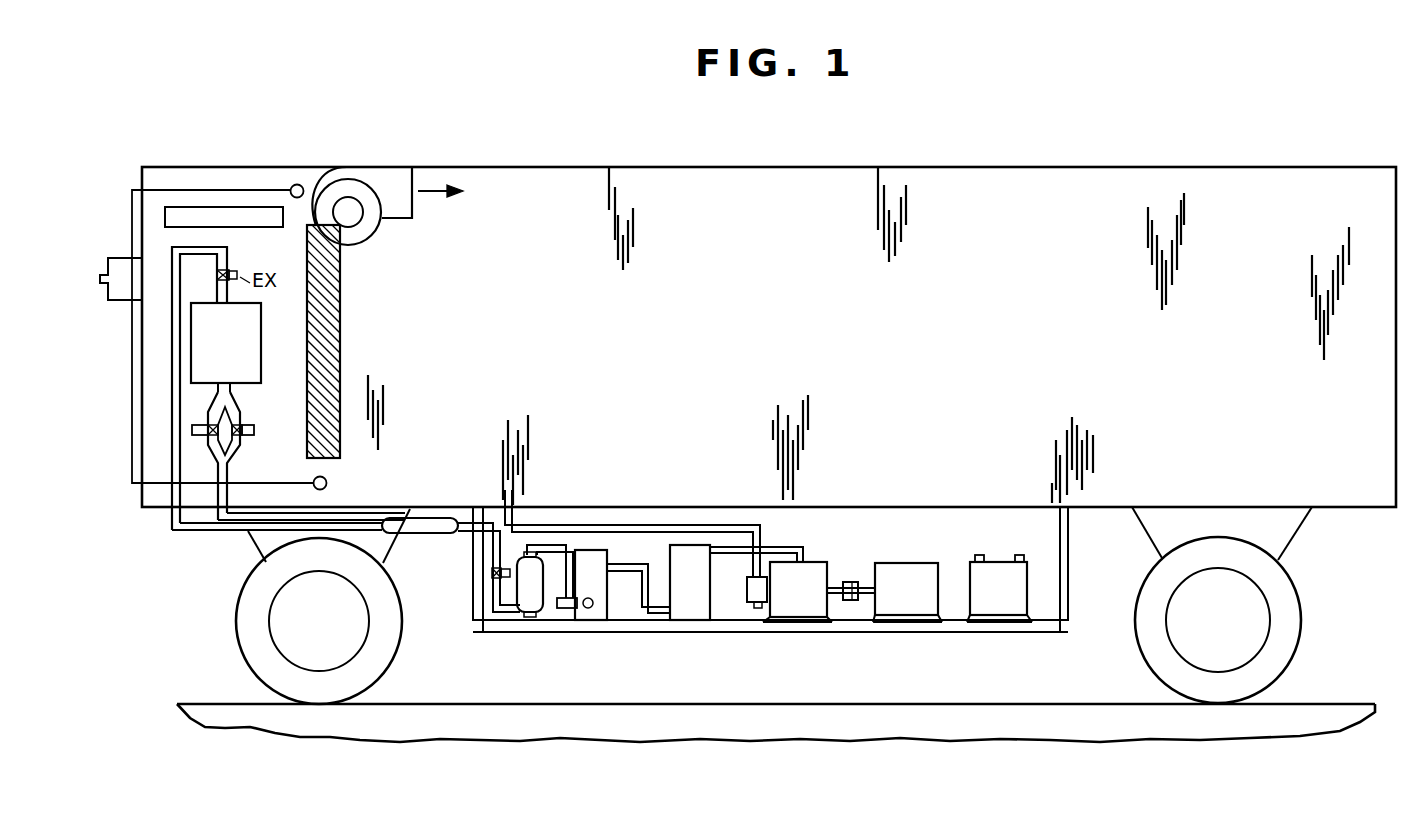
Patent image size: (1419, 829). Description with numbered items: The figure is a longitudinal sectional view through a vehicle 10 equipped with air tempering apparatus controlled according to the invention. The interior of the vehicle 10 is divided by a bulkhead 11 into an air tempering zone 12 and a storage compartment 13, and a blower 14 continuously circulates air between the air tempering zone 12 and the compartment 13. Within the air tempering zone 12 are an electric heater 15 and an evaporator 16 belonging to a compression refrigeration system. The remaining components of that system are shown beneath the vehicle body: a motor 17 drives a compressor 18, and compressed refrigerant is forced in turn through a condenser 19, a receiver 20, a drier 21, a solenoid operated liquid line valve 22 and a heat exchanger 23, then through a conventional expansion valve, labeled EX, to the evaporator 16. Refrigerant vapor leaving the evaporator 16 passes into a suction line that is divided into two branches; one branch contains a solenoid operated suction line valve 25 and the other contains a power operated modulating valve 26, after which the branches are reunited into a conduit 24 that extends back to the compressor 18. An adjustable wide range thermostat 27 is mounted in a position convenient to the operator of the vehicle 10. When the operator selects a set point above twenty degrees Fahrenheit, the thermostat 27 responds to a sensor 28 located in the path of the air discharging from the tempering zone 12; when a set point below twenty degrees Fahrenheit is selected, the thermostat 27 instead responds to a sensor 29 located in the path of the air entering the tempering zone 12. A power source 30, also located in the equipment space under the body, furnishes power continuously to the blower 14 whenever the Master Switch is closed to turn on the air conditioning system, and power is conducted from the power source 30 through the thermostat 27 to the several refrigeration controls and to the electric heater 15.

The vehicle 10 is at (858, 168).
The bulkhead 11 is at (329, 282).
The air tempering zone 12 is at (231, 178).
The storage compartment 13 is at (800, 334).
The blower 14 is at (370, 220).
The electric heater 15 is at (221, 213).
The evaporator 16 is at (234, 359).
The motor 17 is at (917, 601).
The compressor 18 is at (809, 594).
The condenser 19 is at (701, 591).
The receiver 20 is at (600, 587).
The drier 21 is at (539, 598).
The solenoid operated liquid line valve 22 is at (490, 573).
The heat exchanger 23 is at (425, 530).
The conduit 24 is at (228, 472).
The solenoid operated suction line valve 25 is at (198, 426).
The power operated modulating valve 26 is at (253, 425).
The adjustable wide range thermostat 27 is at (134, 290).
The sensor 28 is at (298, 184).
The sensor 29 is at (327, 483).
The power source 30 is at (1011, 601).